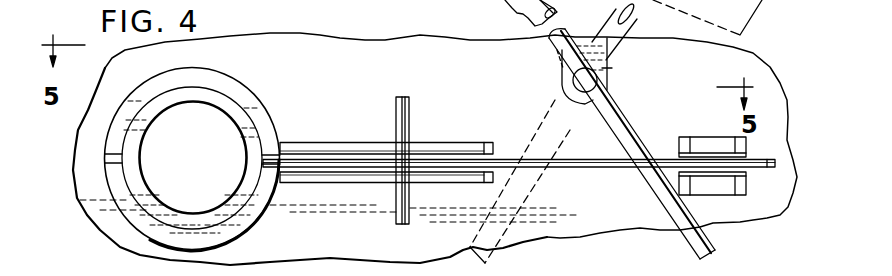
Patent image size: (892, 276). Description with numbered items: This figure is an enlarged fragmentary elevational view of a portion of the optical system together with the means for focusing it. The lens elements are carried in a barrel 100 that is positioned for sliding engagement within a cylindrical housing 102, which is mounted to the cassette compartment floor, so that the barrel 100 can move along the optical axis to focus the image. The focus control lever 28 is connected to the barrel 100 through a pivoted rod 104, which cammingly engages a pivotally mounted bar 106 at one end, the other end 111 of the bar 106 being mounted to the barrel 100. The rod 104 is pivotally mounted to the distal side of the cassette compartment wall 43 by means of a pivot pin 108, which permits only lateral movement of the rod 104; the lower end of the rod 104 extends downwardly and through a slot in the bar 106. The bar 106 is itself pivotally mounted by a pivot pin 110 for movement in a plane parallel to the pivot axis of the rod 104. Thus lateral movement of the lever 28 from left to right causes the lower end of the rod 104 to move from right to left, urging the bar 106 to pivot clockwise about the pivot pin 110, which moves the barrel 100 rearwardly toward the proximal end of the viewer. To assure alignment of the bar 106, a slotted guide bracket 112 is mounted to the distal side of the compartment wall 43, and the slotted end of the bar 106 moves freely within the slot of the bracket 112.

The focus control lever 28 is at (505, 5).
The cassette compartment wall 43 is at (372, 126).
The barrel 100 is at (237, 118).
The cylindrical housing 102 is at (205, 80).
The pivoted rod 104 is at (630, 120).
The bar 106 is at (567, 166).
The pivot pin 108 is at (590, 82).
The pivot pin 110 is at (403, 128).
The other end of the rod 111 is at (270, 153).
The slotted guide bracket 112 is at (727, 188).